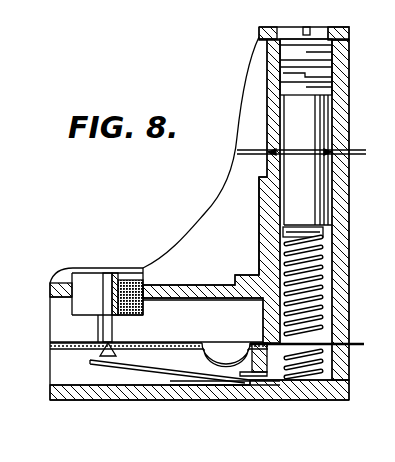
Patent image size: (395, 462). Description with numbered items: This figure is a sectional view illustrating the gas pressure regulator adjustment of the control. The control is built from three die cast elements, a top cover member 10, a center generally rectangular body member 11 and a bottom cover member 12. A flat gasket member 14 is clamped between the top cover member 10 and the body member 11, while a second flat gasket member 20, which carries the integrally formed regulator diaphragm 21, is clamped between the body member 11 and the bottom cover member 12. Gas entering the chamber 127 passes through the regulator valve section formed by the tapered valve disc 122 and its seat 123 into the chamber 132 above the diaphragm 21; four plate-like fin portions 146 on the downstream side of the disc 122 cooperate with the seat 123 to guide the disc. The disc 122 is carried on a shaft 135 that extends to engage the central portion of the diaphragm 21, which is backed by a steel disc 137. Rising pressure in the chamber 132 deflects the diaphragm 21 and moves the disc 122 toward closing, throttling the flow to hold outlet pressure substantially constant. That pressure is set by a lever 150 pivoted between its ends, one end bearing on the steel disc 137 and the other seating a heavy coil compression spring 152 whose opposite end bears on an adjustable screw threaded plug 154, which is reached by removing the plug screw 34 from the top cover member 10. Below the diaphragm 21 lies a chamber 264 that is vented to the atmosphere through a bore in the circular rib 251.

The top cover member 10 is at (348, 98).
The center body member 11 is at (343, 243).
The bottom cover member 12 is at (348, 378).
The flat gasket member 14 is at (312, 155).
The flat gasket member 20 is at (312, 358).
The regulator diaphragm 21 is at (203, 346).
The plug screw 34 is at (326, 33).
The tapered valve disc 122 is at (120, 283).
The valve seat 123 is at (146, 282).
The chamber 127 is at (230, 207).
The chamber 132 is at (52, 340).
The shaft 135 is at (113, 331).
The steel disc 137 is at (80, 349).
The fin portions 146 is at (122, 287).
The lever 150 is at (160, 362).
The coil compression spring 152 is at (336, 296).
The adjustable screw threaded plug 154 is at (313, 195).
The circular rib 251 is at (252, 360).
The chamber 264 is at (97, 378).